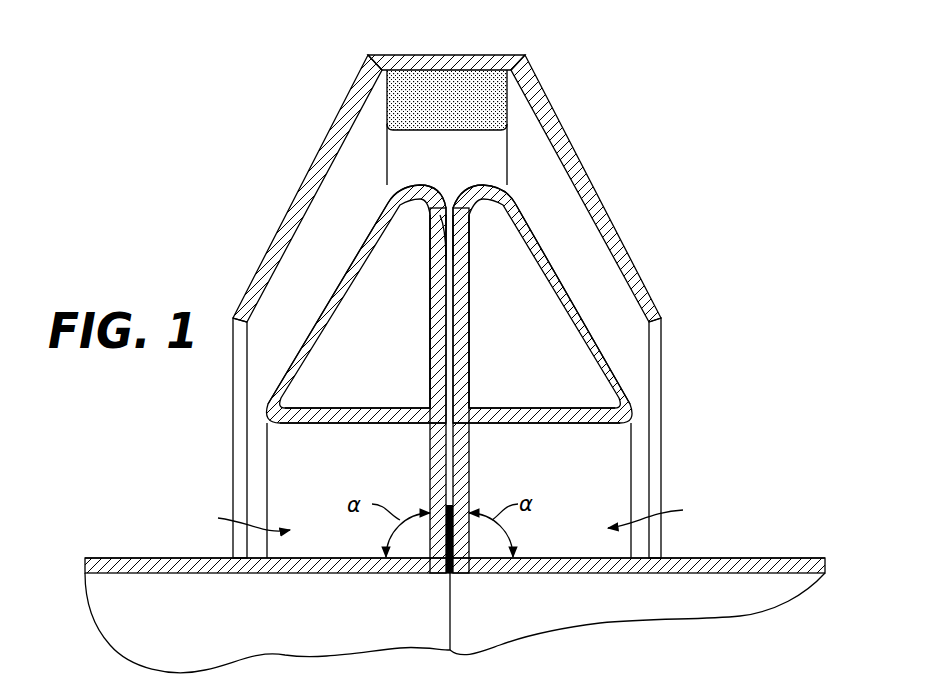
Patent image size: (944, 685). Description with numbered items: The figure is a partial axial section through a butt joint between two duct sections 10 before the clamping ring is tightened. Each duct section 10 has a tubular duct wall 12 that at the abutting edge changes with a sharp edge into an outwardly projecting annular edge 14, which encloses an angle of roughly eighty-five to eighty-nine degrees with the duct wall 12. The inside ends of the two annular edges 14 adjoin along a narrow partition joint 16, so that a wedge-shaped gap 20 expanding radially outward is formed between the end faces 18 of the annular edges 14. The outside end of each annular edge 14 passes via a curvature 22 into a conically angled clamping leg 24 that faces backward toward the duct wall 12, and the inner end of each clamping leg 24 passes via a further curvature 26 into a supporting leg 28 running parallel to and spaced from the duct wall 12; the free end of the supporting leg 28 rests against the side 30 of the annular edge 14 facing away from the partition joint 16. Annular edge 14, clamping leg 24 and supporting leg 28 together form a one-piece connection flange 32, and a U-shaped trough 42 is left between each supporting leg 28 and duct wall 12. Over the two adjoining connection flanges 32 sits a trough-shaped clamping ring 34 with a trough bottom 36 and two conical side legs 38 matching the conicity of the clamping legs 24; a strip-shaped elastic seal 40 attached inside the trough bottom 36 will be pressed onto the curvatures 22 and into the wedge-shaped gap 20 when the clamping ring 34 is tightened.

The duct section 10 is at (138, 552).
The duct wall 12 is at (97, 567).
The annular edge 14 is at (432, 487).
The partition joint 16 is at (452, 612).
The end face 18 is at (455, 245).
The wedge-shaped gap 20 is at (442, 235).
The curvature 22 is at (382, 187).
The clamping leg 24 is at (315, 308).
The curvature 26 is at (238, 402).
The supporting leg 28 is at (355, 408).
The side of annular edge 30 is at (428, 340).
The connection flange 32 is at (335, 252).
The clamping ring 34 is at (558, 114).
The trough bottom 36 is at (495, 62).
The side leg 38 is at (307, 182).
The elastic seal 40 is at (468, 92).
The U-shaped trough 42 is at (450, 513).